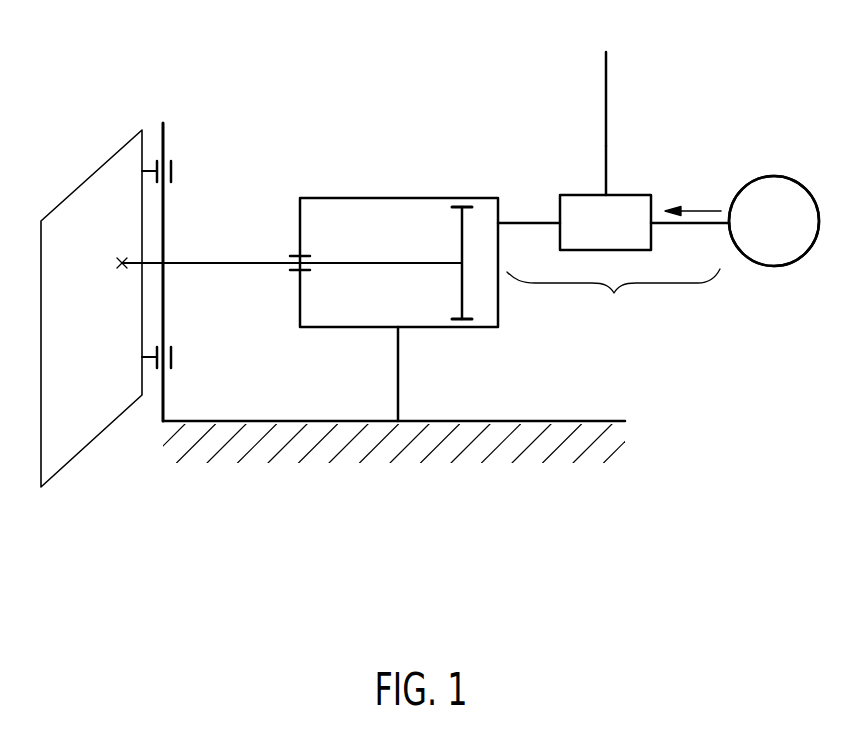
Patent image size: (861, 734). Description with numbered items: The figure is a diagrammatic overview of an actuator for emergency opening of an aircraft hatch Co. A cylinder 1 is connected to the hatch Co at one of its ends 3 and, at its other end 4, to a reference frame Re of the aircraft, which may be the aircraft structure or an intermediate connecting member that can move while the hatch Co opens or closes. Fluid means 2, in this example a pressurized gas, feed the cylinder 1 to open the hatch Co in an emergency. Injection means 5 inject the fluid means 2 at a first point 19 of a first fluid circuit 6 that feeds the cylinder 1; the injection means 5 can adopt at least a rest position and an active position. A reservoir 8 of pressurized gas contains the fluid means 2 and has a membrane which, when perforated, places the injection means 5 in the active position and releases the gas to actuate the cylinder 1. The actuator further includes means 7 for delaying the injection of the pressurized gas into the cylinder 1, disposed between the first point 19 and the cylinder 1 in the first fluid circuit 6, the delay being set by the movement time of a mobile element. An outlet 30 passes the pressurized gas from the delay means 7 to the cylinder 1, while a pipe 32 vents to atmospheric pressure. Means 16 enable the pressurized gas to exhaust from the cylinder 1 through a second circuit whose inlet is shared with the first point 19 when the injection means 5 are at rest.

The cylinder 1 is at (376, 198).
The fluid means 2 is at (680, 207).
The end of the cylinder connected to the hatch 3 is at (122, 262).
The other end of the cylinder 4 is at (480, 198).
The injection means 5 is at (780, 175).
The first fluid circuit 6 is at (613, 176).
The means for delaying the injection 7 is at (575, 195).
The reservoir of pressurized gas 8 is at (777, 257).
The exhaust means 16 is at (606, 146).
The first point of the first fluid circuit 19 is at (712, 205).
The outlet for the pressurized gas to the cylinder 30 is at (528, 222).
The pipe venting to atmospheric pressure 32 is at (605, 163).
The hatch Co is at (94, 418).
The reference frame Re is at (476, 423).